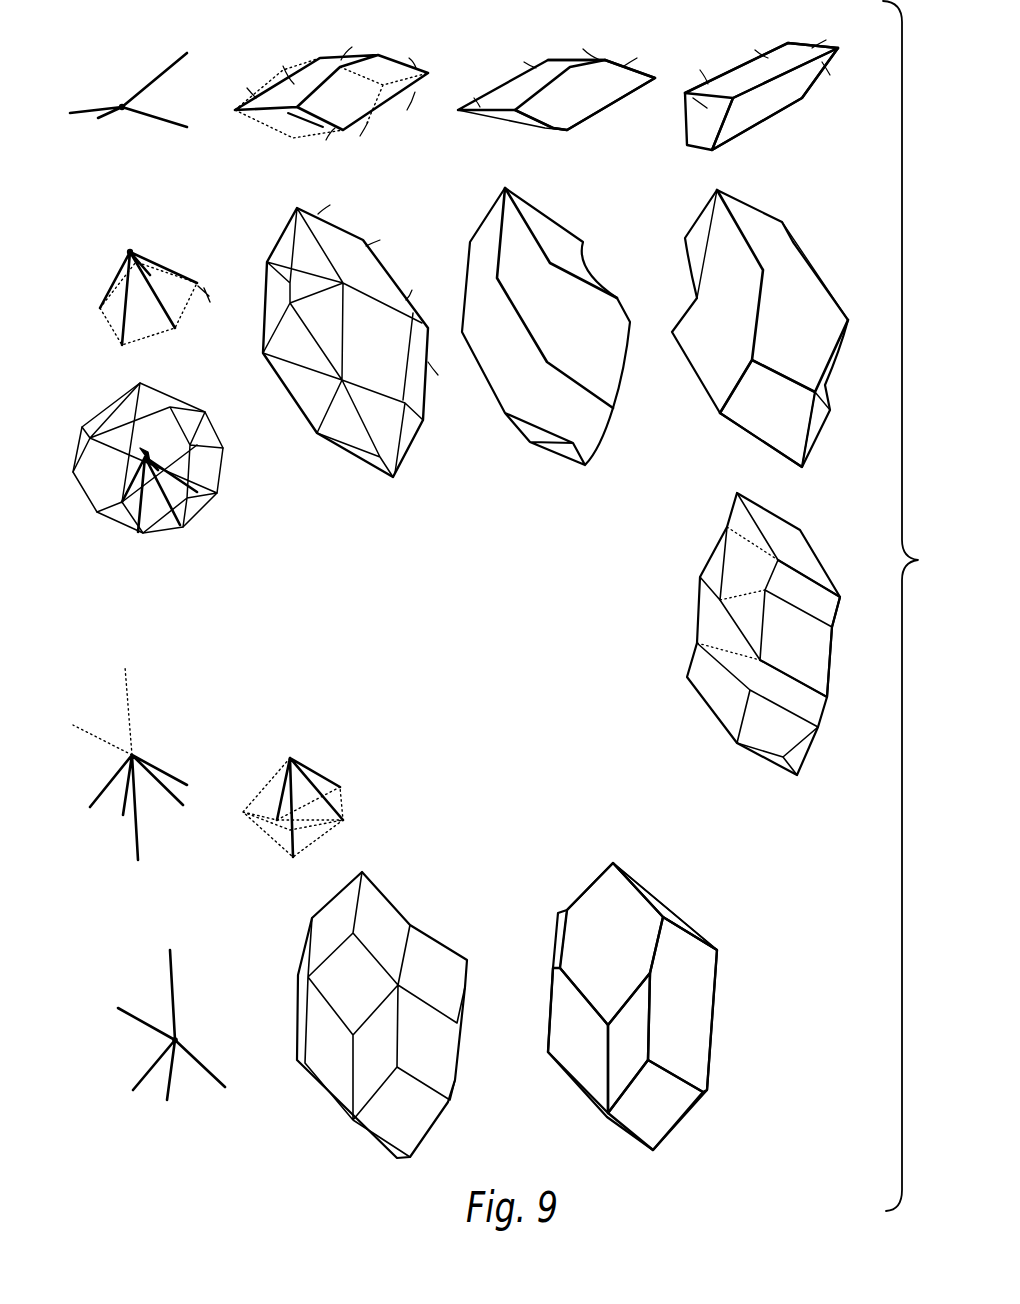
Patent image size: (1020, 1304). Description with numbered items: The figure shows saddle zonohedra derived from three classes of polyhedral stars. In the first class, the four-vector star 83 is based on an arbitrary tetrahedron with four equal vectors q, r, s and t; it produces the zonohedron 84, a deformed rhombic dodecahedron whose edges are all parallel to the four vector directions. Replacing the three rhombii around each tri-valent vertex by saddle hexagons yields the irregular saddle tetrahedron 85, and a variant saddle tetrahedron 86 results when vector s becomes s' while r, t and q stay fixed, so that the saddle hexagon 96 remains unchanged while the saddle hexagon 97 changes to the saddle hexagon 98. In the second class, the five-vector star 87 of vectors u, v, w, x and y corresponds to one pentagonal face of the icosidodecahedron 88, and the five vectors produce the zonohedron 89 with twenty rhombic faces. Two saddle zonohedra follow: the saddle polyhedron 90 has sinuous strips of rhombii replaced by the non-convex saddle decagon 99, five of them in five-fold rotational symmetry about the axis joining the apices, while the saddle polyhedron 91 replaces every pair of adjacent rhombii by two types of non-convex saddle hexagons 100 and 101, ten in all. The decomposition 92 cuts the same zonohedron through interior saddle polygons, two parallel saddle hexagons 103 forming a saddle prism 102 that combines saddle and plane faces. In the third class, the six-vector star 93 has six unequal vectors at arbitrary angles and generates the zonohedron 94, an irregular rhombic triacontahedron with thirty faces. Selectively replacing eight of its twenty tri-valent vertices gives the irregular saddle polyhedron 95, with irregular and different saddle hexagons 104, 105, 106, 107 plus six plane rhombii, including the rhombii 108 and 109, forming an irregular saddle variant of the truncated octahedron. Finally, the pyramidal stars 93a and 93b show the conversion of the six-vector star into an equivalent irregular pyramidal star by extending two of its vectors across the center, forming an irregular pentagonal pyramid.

The 4-star 83 is at (117, 145).
The zonohedron 84 is at (296, 148).
The irregular saddle tetrahedron 85 is at (647, 90).
The variant saddle tetrahedron 86 is at (768, 88).
The 5-star 87 is at (70, 323).
The icosidodecahedron 88 is at (67, 517).
The zonohedron 89 is at (294, 450).
The saddle polyhedron 90 is at (546, 341).
The saddle polyhedron 91 is at (758, 336).
The decomposition of zonohedron 92 is at (774, 634).
The pyramidal star 93a is at (67, 832).
The irregular pyramidal star 93b is at (240, 843).
The 6-star 93 is at (91, 1084).
The zonohedron 94 is at (291, 1092).
The irregular saddle polyhedron 95 is at (666, 1006).
The saddle hexagon 96 is at (548, 60).
The saddle hexagon 97 is at (585, 95).
The saddle hexagon 98 is at (820, 145).
The non-convex saddle decagon 99 is at (557, 301).
The non-convex saddle hexagon 100 is at (773, 301).
The non-convex saddle hexagon 101 is at (767, 413).
The saddle prism 102 is at (822, 672).
The saddle hexagon 103 is at (832, 608).
The saddle hexagon 104 is at (611, 944).
The saddle hexagon 105 is at (682, 1004).
The saddle hexagon 106 is at (655, 1105).
The saddle hexagon 107 is at (578, 1040).
The plane rhombus 108 is at (672, 917).
The plane rhombus 109 is at (629, 1043).